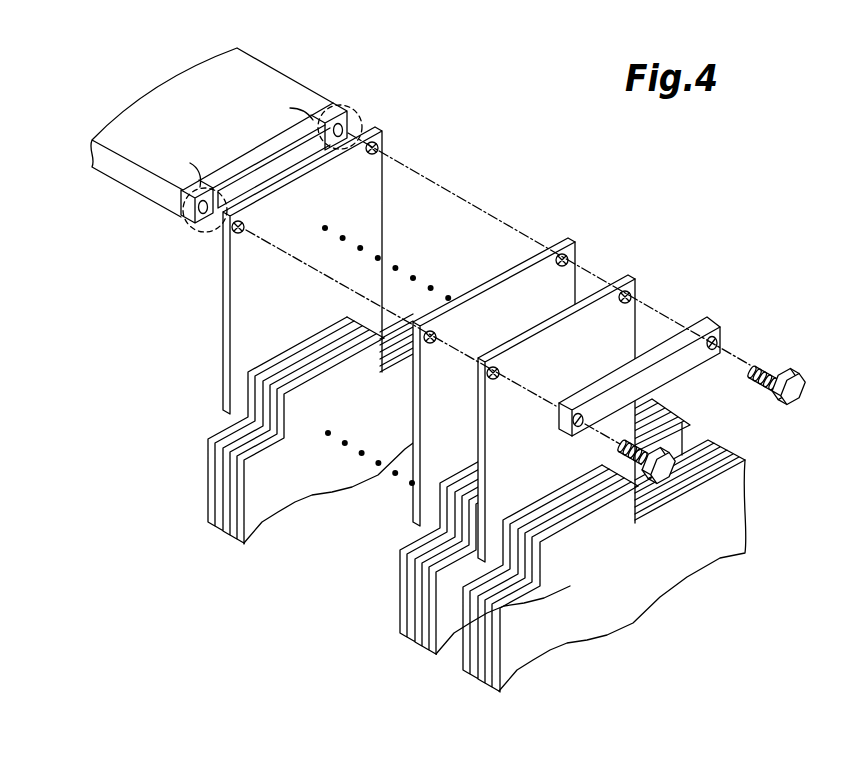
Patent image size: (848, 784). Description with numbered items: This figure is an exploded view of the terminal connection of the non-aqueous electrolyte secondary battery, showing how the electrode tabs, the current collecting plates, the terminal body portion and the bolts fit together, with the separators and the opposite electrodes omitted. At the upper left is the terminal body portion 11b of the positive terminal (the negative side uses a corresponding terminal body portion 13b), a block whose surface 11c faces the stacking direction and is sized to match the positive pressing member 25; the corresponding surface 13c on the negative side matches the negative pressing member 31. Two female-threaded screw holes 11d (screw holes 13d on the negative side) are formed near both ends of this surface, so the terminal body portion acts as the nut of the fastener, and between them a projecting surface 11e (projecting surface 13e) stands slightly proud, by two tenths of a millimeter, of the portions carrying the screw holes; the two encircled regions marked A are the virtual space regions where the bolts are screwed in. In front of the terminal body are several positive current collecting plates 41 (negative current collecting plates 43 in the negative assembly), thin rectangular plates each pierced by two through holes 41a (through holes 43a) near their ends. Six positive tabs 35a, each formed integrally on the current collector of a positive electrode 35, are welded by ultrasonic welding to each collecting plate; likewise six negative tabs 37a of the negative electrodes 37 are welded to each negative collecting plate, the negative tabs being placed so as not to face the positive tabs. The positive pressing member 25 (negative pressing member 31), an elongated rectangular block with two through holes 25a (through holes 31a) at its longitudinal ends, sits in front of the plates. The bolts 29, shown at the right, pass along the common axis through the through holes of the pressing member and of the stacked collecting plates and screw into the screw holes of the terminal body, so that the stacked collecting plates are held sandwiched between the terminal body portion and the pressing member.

The terminal body portion of the positive terminal 11b is at (257, 160).
The terminal body portion of the negative terminal 13b is at (257, 160).
The surface 11c is at (162, 231).
The surface 13c is at (213, 218).
The screw holes 11d is at (257, 154).
The screw holes 13d is at (355, 122).
The projecting surface 11e is at (294, 171).
The projecting surface 13e is at (263, 173).
The positive current collecting plate 41 is at (427, 337).
The negative current collecting plate 43 is at (427, 337).
The through holes 41a is at (427, 260).
The through holes 43a is at (378, 153).
The positive electrode 35 is at (423, 527).
The negative electrode 37 is at (423, 527).
The positive tab 35a is at (423, 503).
The negative tab 37a is at (284, 414).
The positive pressing member 25 is at (663, 395).
The negative pressing member 31 is at (663, 395).
The through holes 25a is at (663, 397).
The through holes 31a is at (718, 343).
The bolts 29 is at (800, 388).